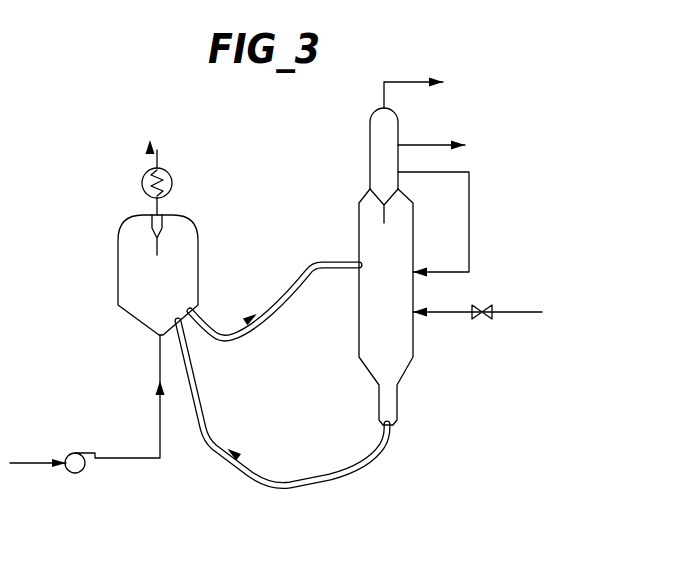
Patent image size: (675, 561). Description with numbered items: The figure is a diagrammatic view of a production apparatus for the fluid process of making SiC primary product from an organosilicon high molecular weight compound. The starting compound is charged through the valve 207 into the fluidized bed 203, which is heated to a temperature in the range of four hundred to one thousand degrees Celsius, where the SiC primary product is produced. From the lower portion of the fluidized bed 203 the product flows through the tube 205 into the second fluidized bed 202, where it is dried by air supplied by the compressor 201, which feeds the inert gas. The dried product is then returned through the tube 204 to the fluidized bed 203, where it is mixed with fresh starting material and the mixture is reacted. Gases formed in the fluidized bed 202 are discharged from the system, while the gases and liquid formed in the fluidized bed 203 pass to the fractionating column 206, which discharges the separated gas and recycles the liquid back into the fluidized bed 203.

The compressor 201 is at (85, 470).
The fluidized bed 202 is at (128, 290).
The fluidized bed 203 is at (359, 313).
The tube 204 is at (287, 305).
The tube 205 is at (288, 478).
The fractionating column 206 is at (370, 138).
The valve 207 is at (477, 317).